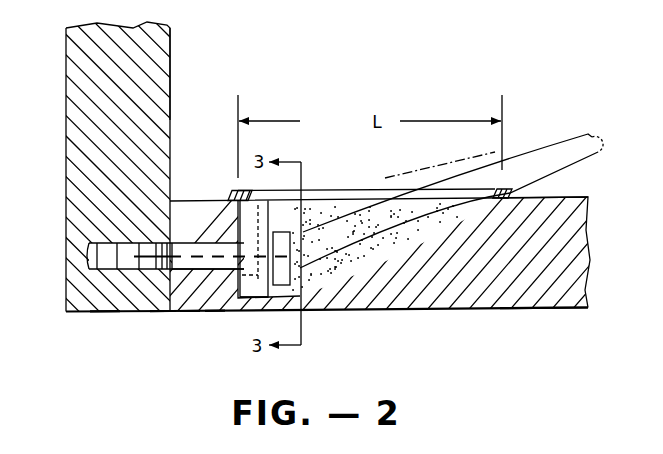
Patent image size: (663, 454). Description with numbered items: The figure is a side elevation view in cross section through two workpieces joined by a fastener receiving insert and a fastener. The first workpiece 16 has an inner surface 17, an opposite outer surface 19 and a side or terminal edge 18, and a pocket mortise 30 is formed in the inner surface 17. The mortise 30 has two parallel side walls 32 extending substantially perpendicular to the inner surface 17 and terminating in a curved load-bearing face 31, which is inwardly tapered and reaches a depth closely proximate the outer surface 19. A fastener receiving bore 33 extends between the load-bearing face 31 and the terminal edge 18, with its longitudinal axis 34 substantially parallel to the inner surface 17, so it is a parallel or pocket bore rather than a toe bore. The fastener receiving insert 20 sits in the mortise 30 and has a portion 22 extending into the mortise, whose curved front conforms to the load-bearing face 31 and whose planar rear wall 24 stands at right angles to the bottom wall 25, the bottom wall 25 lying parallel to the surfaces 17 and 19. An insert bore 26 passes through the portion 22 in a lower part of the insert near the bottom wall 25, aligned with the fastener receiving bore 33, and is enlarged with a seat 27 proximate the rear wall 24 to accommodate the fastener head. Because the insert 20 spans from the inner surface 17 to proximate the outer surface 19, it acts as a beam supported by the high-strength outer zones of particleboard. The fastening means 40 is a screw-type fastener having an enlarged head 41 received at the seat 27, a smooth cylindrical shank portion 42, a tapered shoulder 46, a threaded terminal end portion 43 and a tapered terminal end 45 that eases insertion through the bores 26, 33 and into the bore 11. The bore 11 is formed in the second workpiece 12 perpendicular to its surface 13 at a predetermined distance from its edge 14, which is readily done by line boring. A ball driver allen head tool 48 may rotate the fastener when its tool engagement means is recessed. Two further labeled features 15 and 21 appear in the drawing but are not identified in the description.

The bore 11 is at (100, 313).
The second workpiece 12 is at (72, 93).
The surface 13 is at (172, 62).
The edge 14 is at (70, 313).
The wall inner surface 15 is at (66, 160).
The workpiece 16 is at (503, 277).
The inner surface 17 is at (578, 198).
The terminal edge 18 is at (160, 307).
The outer surface 19 is at (547, 308).
The fastener receiving insert 20 is at (224, 194).
The cover layer 21 is at (384, 196).
The insert portion 22 is at (292, 200).
The rear wall 24 is at (283, 207).
The bottom wall 25 is at (250, 303).
The insert bore 26 is at (257, 198).
The seat 27 is at (303, 320).
The mortise 30 is at (436, 225).
The curved load-bearing face 31 is at (236, 190).
The side walls 32 is at (412, 243).
The fastener receiving bore 33 is at (188, 310).
The longitudinal axis 34 is at (291, 217).
The fastening means 40 is at (295, 253).
The enlarged head 41 is at (297, 281).
The smooth cylindrical shank portion 42 is at (215, 290).
The threaded terminal end portion 43 is at (152, 243).
The terminal end 45 is at (89, 257).
The tapered shoulder 46 is at (157, 312).
The ball driver allen head tool 48 is at (543, 146).